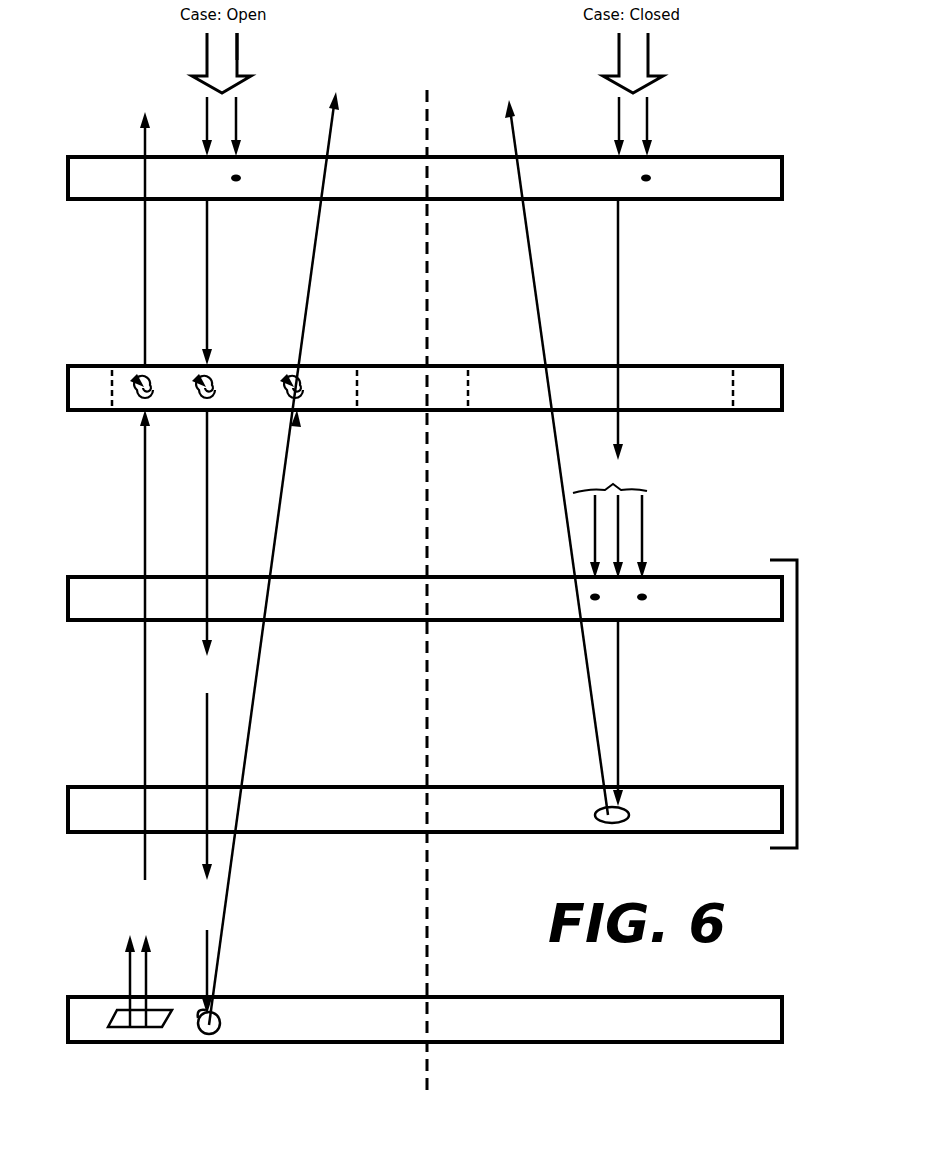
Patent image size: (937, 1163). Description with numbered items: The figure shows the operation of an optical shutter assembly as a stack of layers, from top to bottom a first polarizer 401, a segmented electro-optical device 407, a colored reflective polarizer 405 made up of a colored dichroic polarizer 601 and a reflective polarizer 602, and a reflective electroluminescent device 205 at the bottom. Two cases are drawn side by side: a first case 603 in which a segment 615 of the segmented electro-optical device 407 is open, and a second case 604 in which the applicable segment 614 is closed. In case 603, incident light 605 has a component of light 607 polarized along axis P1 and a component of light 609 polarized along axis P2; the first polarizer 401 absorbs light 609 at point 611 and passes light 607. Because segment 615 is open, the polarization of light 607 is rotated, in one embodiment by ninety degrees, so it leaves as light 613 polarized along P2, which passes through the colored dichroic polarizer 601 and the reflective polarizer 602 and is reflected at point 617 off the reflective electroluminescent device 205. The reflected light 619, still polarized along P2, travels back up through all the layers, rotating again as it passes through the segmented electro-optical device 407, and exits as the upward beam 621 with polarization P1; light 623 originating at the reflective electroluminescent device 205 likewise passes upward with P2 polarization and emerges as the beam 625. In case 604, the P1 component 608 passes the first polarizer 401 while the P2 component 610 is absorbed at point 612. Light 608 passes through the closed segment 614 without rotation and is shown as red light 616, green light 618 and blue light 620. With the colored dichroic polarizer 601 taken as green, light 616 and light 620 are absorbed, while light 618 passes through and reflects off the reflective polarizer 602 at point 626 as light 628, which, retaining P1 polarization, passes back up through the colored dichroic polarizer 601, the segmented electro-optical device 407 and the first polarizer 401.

The reflective electroluminescent device 205 is at (82, 1017).
The first polarizer 401 is at (76, 176).
The colored reflective polarizer 405 is at (799, 690).
The segmented electro-optical device 407 is at (76, 385).
The colored dichroic polarizer 601 is at (76, 597).
The reflective polarizer 602 is at (76, 808).
The first case 603 is at (173, 13).
The second case 604 is at (682, 14).
The incident light 605 is at (238, 34).
The component of light polarized along first axis P1 607 is at (207, 108).
The component of light polarized along first axis P1 608 is at (618, 108).
The component of light polarized along second axis P2 609 is at (237, 108).
The component of light polarized along second axis P2 610 is at (648, 108).
The absorption point 611 is at (241, 176).
The absorption point 612 is at (652, 176).
The light polarized along axis P2 613 is at (209, 530).
The segment 614 is at (658, 386).
The segment 615 is at (332, 386).
The red component light 616 is at (594, 492).
The reflection point 617 is at (222, 1015).
The green component light 618 is at (617, 488).
The reflected light 619 is at (265, 645).
The blue component light 620 is at (644, 496).
The reflected P1 beam 621 is at (320, 228).
The light originating at reflective electroluminescent device 623 is at (112, 942).
The reflected P1 beam 625 is at (144, 222).
The reflection point 626 is at (630, 813).
The reflected light 628 is at (528, 220).